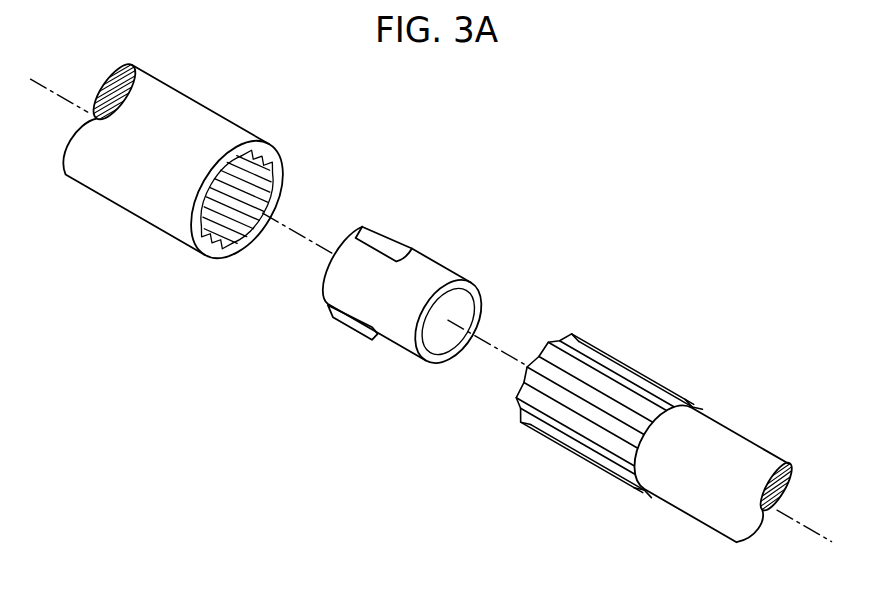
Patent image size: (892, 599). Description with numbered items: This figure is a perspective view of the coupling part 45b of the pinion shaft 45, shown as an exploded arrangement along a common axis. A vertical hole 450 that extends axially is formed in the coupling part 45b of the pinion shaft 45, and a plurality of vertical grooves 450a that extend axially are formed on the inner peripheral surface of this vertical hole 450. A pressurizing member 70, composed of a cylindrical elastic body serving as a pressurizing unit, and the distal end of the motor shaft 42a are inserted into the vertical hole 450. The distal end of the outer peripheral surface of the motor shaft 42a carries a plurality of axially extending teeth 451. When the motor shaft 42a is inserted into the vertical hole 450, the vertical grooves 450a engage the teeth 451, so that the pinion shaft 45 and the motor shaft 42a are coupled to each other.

The pinion shaft 45 is at (210, 115).
The coupling part 45b is at (507, 144).
The vertical hole 450 is at (268, 202).
The vertical grooves 450a is at (243, 250).
The pressurizing member 70 is at (430, 268).
The teeth 451 is at (623, 368).
The motor shaft 42a is at (727, 442).